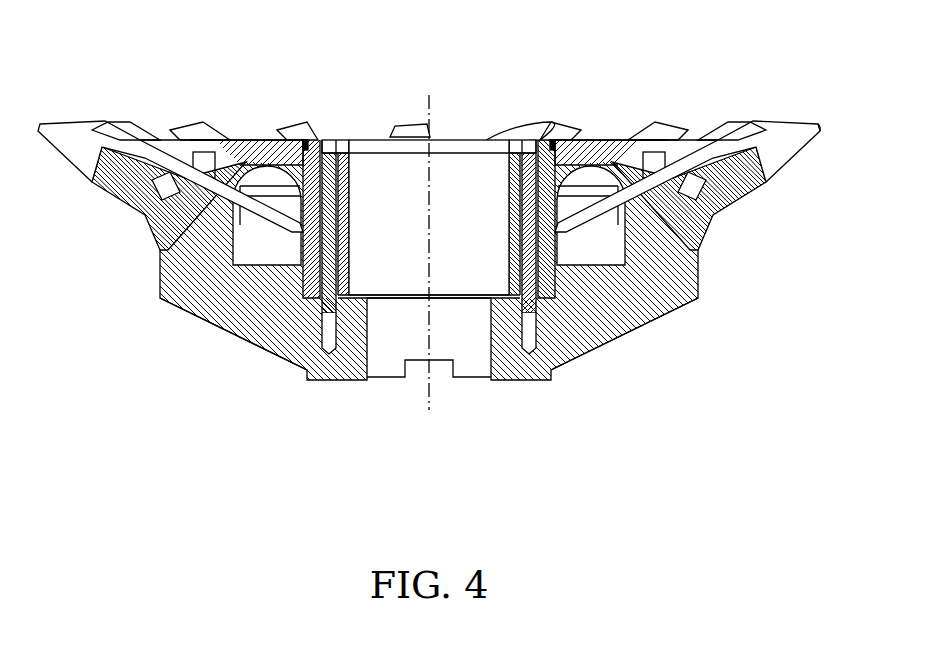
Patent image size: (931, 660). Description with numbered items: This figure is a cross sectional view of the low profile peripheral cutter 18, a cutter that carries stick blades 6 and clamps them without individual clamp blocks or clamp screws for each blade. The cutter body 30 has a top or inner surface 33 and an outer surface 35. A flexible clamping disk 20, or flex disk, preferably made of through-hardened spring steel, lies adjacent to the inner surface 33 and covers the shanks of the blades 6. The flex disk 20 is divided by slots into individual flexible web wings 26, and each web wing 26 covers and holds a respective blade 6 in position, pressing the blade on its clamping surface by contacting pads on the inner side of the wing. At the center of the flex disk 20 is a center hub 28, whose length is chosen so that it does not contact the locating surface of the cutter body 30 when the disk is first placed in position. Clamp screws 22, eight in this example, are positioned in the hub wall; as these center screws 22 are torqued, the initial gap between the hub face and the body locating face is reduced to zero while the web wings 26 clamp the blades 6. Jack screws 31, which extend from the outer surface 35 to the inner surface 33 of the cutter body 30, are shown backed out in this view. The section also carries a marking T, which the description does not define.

The stick blade 6 is at (810, 120).
The low profile peripheral cutter 18 is at (578, 104).
The flexible clamping disk 20 is at (258, 140).
The clamp screw 22 is at (338, 140).
The flexible web wing 26 is at (113, 207).
The center hub 28 is at (506, 213).
The cutter body 30 is at (222, 302).
The jack screw 31 is at (160, 200).
The inner surface 33 is at (683, 303).
The outer surface 35 is at (275, 358).
The axis T is at (428, 400).